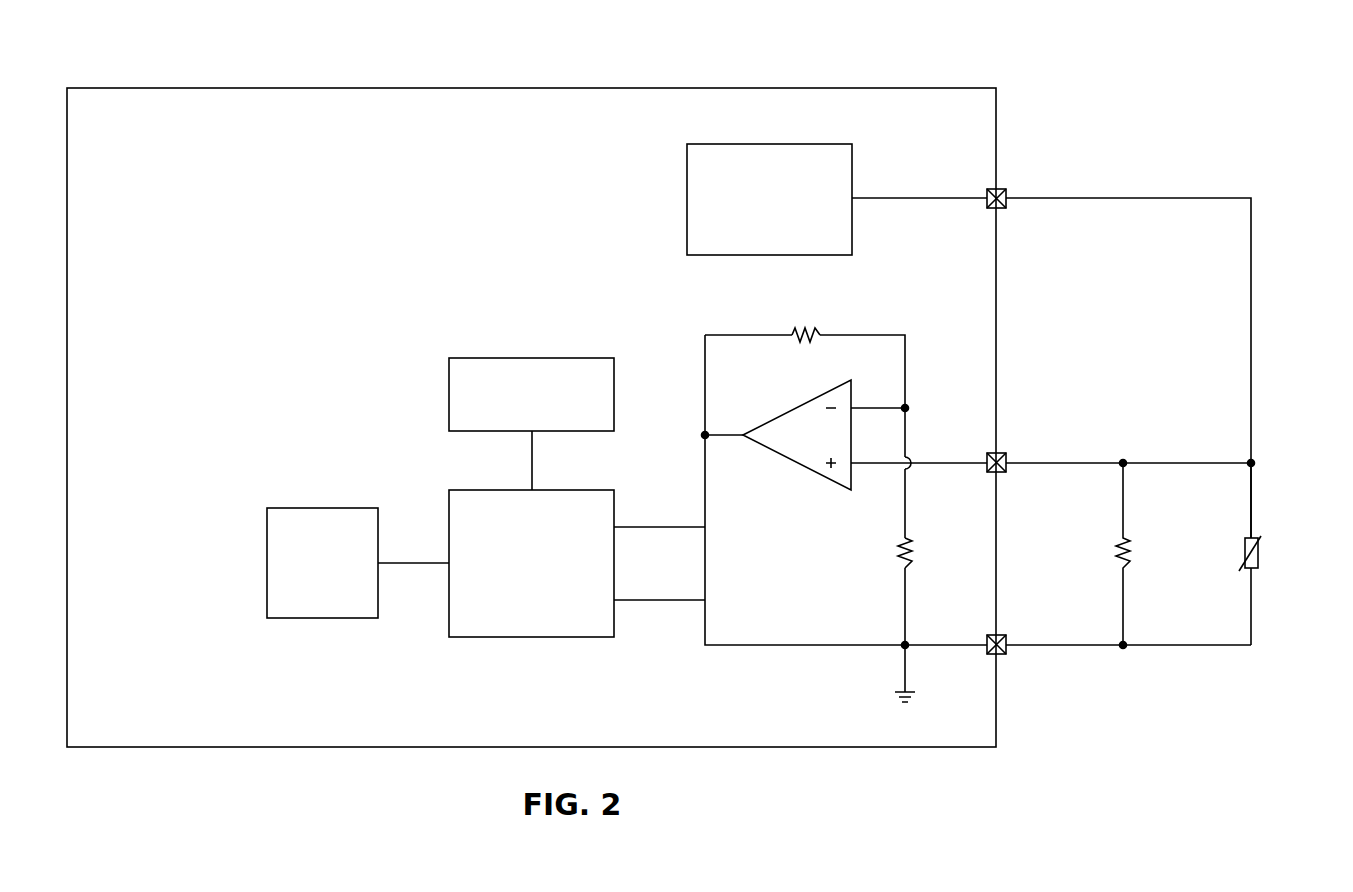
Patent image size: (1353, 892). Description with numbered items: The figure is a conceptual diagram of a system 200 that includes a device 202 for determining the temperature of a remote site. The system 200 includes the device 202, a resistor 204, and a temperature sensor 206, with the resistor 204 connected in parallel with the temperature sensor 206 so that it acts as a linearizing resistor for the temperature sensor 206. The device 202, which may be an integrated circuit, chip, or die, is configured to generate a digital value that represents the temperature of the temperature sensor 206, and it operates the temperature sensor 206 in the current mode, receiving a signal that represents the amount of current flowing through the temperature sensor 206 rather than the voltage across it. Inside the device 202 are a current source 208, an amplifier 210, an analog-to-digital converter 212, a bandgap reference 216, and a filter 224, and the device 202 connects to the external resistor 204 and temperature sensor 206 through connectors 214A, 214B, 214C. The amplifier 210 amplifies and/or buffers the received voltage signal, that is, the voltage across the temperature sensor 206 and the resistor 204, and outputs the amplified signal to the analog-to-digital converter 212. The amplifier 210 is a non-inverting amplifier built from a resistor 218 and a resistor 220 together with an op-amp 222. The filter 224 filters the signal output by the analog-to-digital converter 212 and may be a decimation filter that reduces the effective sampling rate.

The system 200 is at (1236, 105).
The device 202 is at (531, 417).
The resistor 204 is at (1118, 548).
The temperature sensor 206 is at (1243, 548).
The current source 208 is at (769, 199).
The amplifier 210 is at (845, 485).
The analog-to-digital converter 212 is at (531, 563).
The connector 214A is at (1006, 190).
The connector 214B is at (1006, 455).
The connector 214C is at (1006, 637).
The bandgap reference 216 is at (531, 394).
The resistor 218 is at (792, 330).
The resistor 220 is at (900, 548).
The op-amp 222 is at (789, 459).
The filter 224 is at (322, 563).